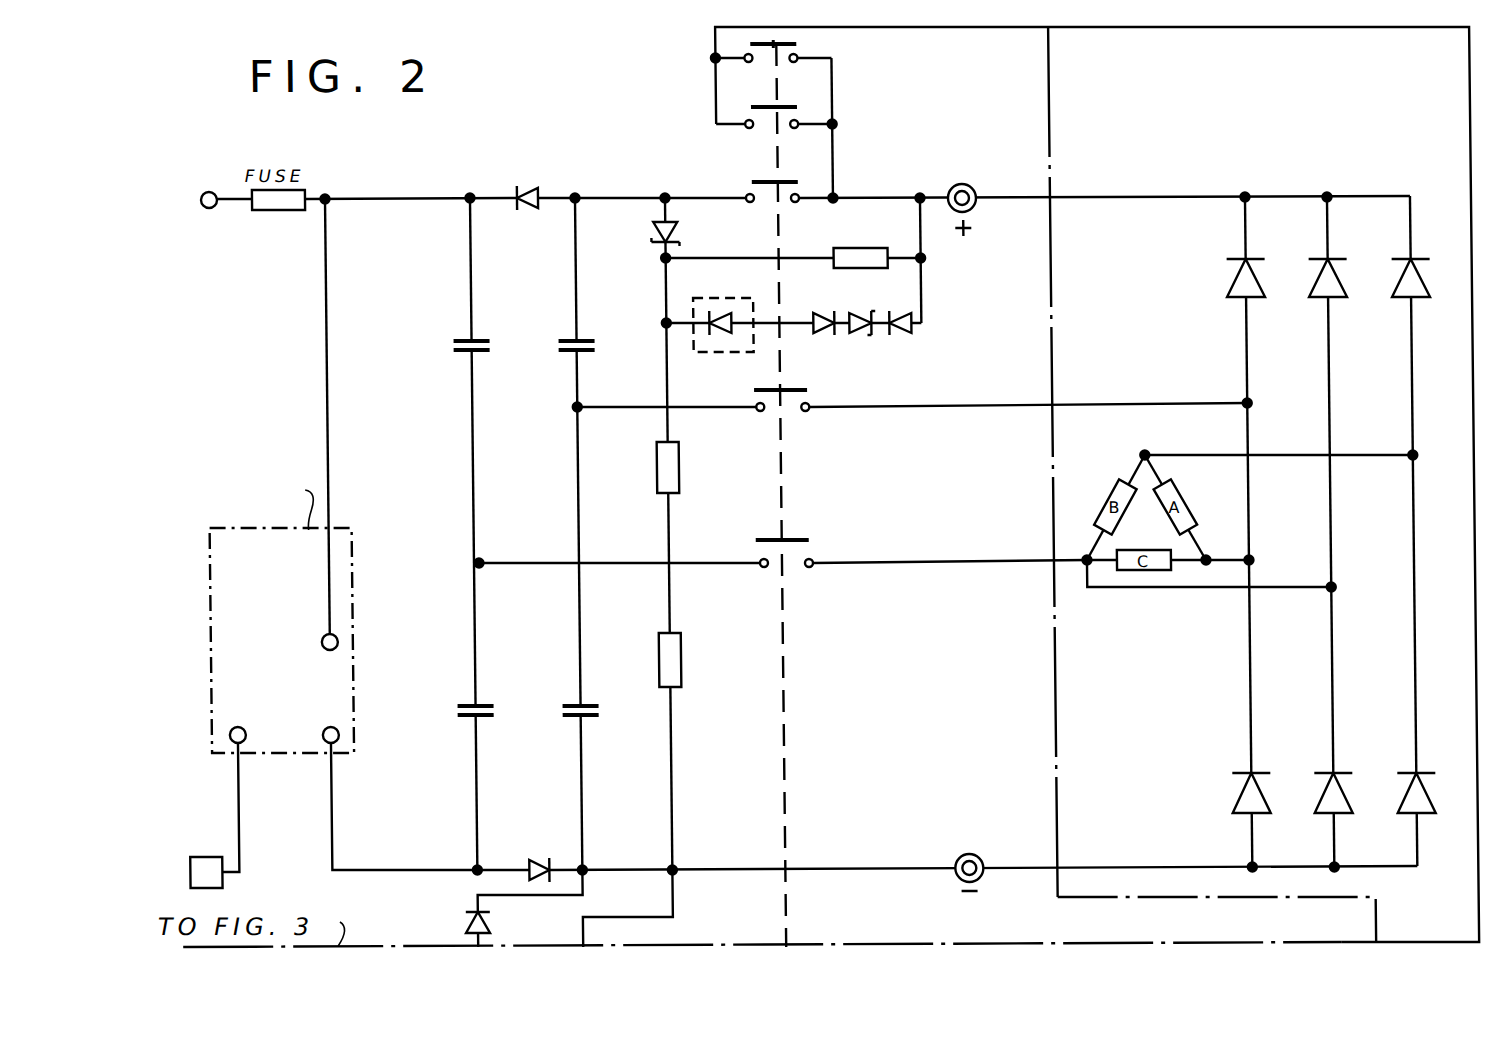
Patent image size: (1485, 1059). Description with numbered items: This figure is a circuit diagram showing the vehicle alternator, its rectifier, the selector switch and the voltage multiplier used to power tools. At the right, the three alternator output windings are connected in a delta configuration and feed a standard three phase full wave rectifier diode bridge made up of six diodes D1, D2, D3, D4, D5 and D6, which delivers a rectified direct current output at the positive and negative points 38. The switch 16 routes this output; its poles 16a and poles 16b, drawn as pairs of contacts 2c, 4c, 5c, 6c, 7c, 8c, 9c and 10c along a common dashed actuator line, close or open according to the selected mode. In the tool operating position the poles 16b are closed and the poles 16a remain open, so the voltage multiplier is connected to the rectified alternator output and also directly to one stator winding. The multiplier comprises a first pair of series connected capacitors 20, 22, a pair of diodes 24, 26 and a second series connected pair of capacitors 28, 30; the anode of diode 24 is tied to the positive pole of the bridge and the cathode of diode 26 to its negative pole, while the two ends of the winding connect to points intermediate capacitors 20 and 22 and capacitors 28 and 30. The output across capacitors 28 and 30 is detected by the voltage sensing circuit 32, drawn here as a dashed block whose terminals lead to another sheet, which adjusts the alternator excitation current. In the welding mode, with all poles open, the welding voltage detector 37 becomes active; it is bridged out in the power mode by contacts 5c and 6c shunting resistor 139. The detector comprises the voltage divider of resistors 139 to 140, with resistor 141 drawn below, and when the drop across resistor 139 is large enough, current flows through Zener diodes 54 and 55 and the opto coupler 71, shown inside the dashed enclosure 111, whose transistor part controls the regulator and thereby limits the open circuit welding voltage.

The switch 16 is at (756, 156).
The poles of switch 16a is at (794, 69).
The poles of switch 16b is at (791, 272).
The contact 2c is at (771, 68).
The contact 4c is at (776, 133).
The contact 5c is at (744, 210).
The contact 6c is at (803, 210).
The contact 7c is at (670, 421).
The contact 8c is at (1023, 421).
The contact 9c is at (623, 577).
The contact 10c is at (944, 577).
The capacitor 20 is at (590, 352).
The capacitor 22 is at (590, 717).
The diode 24 is at (545, 176).
The diode 26 is at (550, 845).
The capacitor 28 is at (478, 352).
The capacitor 30 is at (478, 717).
The voltage sensing circuit 32 is at (368, 536).
The welding voltage detector 37 is at (826, 326).
The rectified D.C. output points 38 is at (966, 182).
The Zener diode 54 is at (817, 308).
The Zener diode 55 is at (865, 340).
The opto coupler 71 is at (743, 299).
The dashed enclosure 111 is at (723, 340).
The resistor 139 is at (878, 240).
The resistor 140 is at (678, 468).
The resistor 141 is at (678, 660).
The diode D1 is at (1262, 297).
The diode D2 is at (1344, 297).
The diode D3 is at (1427, 297).
The diode D4 is at (1258, 813).
The diode D5 is at (1340, 813).
The diode D6 is at (1423, 813).